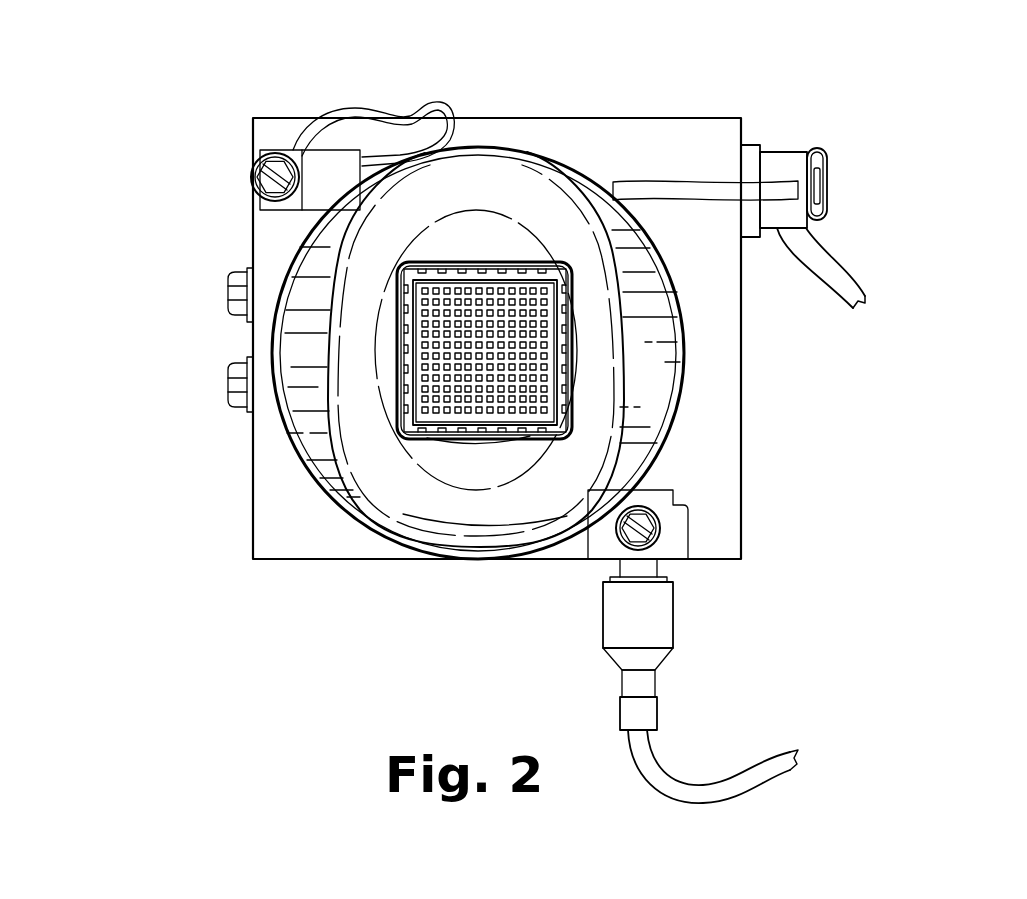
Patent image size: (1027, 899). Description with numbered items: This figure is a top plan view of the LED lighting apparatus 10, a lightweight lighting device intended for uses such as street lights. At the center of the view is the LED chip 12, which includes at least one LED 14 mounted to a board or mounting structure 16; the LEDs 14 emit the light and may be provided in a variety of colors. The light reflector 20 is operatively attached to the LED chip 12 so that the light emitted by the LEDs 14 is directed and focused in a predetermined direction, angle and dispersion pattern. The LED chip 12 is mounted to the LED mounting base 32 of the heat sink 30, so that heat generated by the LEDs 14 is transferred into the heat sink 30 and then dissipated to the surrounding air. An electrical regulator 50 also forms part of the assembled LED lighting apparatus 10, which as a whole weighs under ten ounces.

The LED lighting apparatus 10 is at (114, 172).
The LED chip 12 is at (360, 404).
The LED 14 is at (502, 290).
The board or mounting structure 16 is at (465, 273).
The light reflector 20 is at (245, 344).
The heat sink 30 is at (672, 92).
The LED mounting base 32 is at (713, 136).
The electrical regulator 50 is at (287, 120).